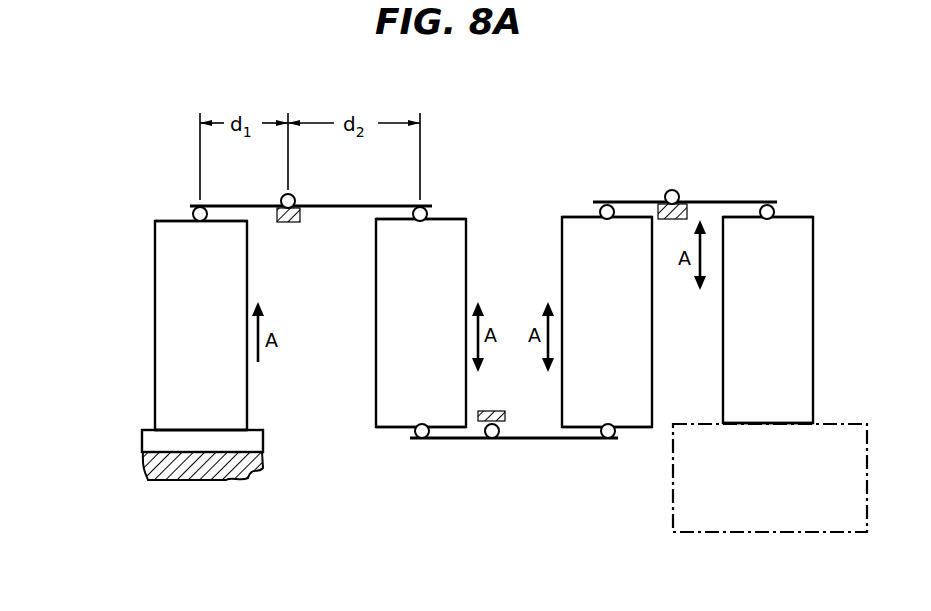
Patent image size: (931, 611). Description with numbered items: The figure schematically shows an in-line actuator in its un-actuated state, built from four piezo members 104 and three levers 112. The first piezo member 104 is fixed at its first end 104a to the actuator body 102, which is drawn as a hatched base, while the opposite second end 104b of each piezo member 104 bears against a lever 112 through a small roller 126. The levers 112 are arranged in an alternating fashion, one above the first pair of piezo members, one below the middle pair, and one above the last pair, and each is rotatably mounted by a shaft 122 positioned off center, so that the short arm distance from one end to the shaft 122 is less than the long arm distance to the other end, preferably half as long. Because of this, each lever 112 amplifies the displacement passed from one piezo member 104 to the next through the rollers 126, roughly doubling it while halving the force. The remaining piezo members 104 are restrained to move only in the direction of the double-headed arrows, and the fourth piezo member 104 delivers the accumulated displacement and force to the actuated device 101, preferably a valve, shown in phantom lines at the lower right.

The actuated device 101 is at (673, 512).
The actuator body 102 is at (262, 440).
The piezo member 104 is at (143, 258).
The first end of piezo member 104a is at (198, 420).
The second end of piezo member 104b is at (175, 232).
The lever 112 is at (712, 201).
The shaft 122 is at (296, 200).
The roller 126 is at (200, 222).